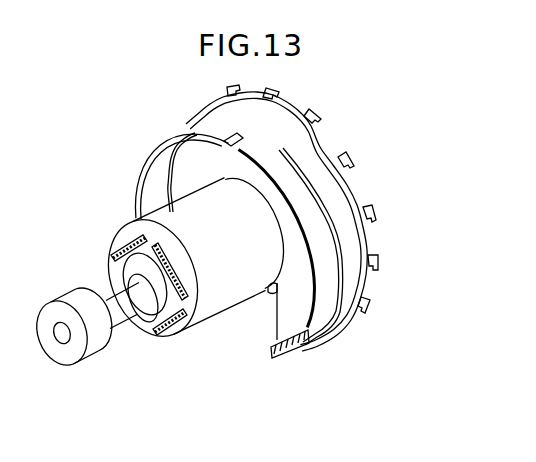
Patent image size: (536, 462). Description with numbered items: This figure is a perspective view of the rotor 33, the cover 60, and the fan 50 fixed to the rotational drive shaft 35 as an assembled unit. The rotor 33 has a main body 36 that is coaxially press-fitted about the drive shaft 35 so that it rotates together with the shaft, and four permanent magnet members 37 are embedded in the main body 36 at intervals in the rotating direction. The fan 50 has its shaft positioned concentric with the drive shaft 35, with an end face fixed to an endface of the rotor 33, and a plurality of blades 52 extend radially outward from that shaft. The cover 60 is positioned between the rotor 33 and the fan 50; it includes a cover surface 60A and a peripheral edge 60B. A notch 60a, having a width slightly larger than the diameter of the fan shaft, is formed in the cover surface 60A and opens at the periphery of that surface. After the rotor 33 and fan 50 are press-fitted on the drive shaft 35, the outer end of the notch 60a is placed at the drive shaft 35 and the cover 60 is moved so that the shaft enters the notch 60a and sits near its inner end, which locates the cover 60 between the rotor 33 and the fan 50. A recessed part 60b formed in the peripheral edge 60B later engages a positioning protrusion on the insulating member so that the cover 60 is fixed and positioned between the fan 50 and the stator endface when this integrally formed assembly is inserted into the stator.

The rotor 33 is at (225, 300).
The drive shaft 35 is at (118, 310).
The main body 36 is at (203, 300).
The permanent magnet members 37 is at (172, 337).
The fan 50 is at (327, 181).
The blades 52 is at (307, 128).
The cover 60 is at (314, 232).
The cover surface 60A is at (297, 297).
The peripheral edge 60B is at (323, 258).
The notch 60a is at (274, 300).
The recessed part 60b is at (224, 145).